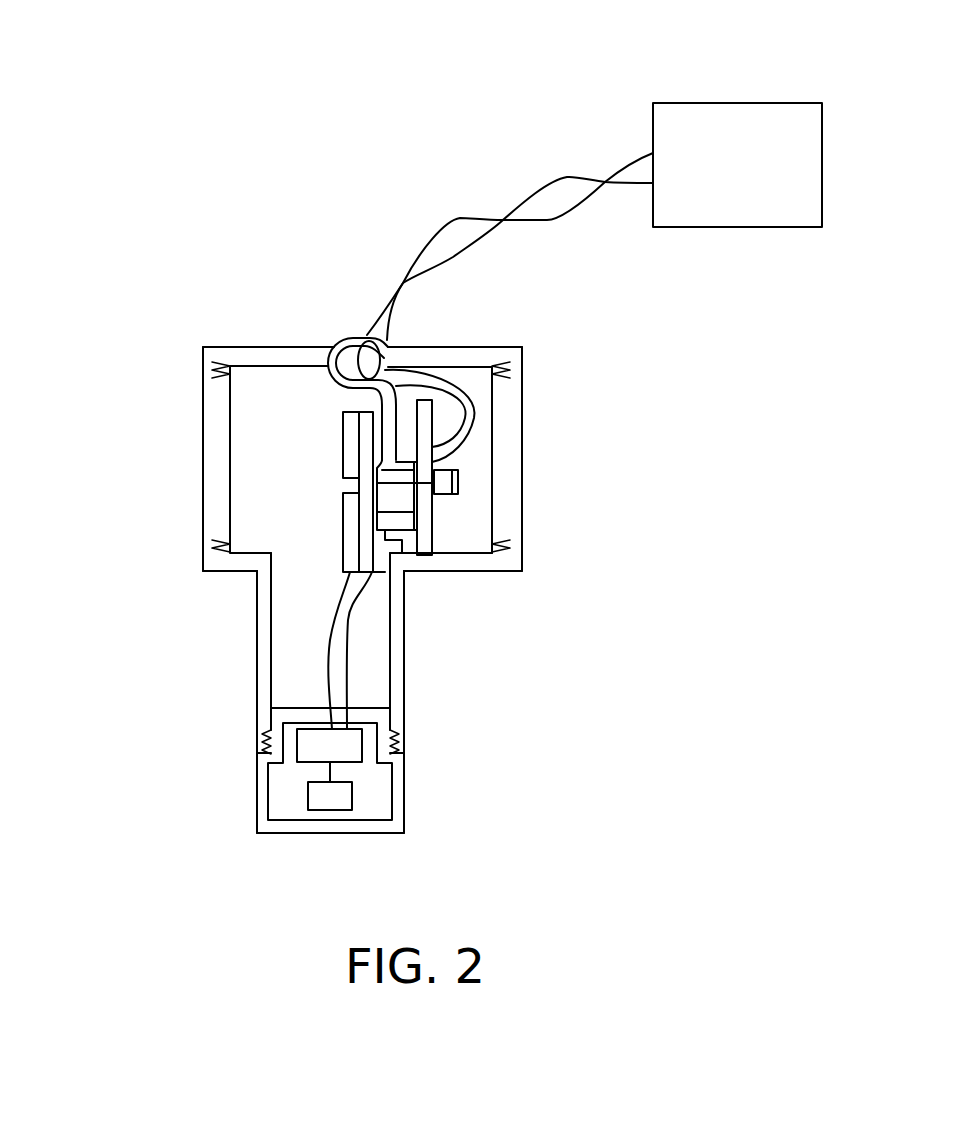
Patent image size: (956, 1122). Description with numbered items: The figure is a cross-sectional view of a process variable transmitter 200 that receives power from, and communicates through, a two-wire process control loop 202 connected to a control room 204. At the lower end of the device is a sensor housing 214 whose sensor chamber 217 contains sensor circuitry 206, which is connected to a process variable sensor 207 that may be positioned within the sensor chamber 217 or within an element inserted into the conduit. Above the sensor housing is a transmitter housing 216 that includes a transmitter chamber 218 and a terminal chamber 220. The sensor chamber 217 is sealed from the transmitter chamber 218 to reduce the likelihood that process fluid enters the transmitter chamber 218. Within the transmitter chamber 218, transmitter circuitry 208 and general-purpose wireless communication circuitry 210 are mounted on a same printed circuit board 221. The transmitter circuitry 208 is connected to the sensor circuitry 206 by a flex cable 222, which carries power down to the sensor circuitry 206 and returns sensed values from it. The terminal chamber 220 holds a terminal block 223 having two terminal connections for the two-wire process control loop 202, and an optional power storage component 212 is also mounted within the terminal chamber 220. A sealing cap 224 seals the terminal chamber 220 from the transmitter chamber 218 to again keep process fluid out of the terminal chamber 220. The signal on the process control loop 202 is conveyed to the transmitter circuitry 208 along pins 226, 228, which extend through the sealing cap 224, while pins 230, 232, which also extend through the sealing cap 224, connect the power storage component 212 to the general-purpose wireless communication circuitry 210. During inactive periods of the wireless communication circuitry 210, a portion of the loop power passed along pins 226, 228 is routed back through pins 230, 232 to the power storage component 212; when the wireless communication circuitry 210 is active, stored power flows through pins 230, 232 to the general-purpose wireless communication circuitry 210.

The process variable transmitter 200 is at (205, 186).
The two-wire process control loop 202 is at (462, 190).
The control room 204 is at (733, 102).
The sensor circuitry 206 is at (343, 748).
The process variable sensor 207 is at (310, 798).
The transmitter circuitry 208 is at (340, 541).
The general-purpose wireless communication circuitry 210 is at (342, 445).
The power storage component 212 is at (378, 478).
The sensor housing 214 is at (405, 803).
The transmitter housing 216 is at (403, 655).
The sensor chamber 217 is at (372, 808).
The transmitter chamber 218 is at (252, 515).
The terminal chamber 220 is at (465, 538).
The printed circuit board 221 is at (377, 571).
The flex cable 222 is at (327, 663).
The terminal block 223 is at (422, 410).
The sealing cap 224 is at (432, 522).
The pin 226 is at (378, 490).
The pin 228 is at (428, 505).
The pin 230 is at (432, 463).
The pin 232 is at (443, 478).